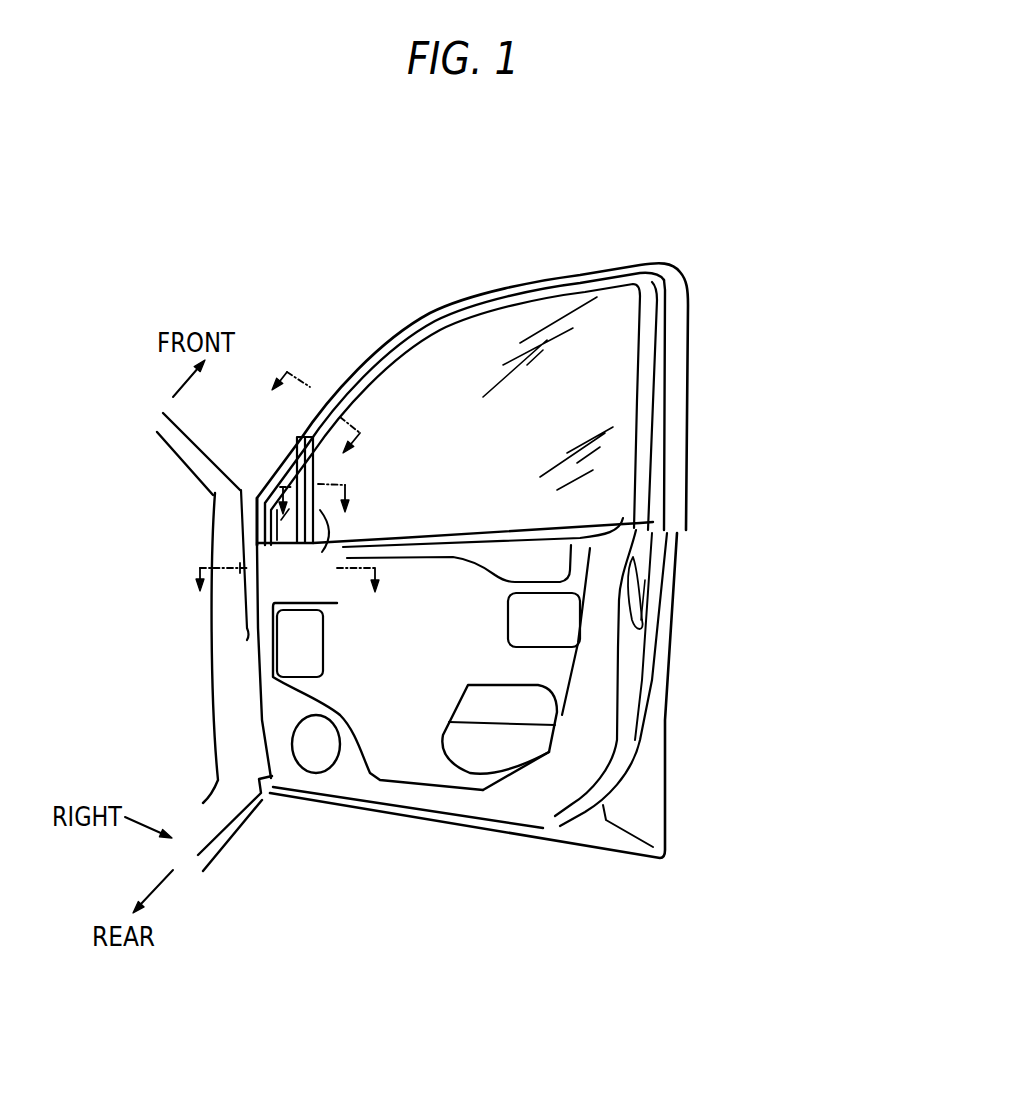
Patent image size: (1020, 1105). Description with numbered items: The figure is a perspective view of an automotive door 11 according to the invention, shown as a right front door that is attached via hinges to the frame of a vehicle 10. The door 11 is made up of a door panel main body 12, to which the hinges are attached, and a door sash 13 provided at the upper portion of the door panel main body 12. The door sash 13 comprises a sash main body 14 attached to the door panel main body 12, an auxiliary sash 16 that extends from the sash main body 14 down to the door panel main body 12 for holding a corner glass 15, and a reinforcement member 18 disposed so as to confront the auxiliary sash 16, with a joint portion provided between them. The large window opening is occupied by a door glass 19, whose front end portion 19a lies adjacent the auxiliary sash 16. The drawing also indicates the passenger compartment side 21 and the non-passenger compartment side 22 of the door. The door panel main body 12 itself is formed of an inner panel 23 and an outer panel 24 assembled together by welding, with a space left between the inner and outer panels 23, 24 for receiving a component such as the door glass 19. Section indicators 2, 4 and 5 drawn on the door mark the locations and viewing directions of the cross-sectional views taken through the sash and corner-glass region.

The vehicle 10 is at (237, 268).
The door 11 is at (391, 280).
The door panel main body 12 is at (705, 643).
The door sash 13 is at (704, 278).
The sash main body 14 is at (690, 337).
The corner glass 15 is at (280, 535).
The auxiliary sash 16 is at (322, 452).
The reinforcement member 18 is at (286, 465).
The door glass 19 is at (508, 328).
The front end portion of the door glass 19a is at (318, 552).
The passenger compartment side 21 is at (190, 703).
The non-passenger compartment side 22 is at (705, 820).
The inner panel 23 is at (527, 793).
The outer panel 24 is at (665, 730).
The section line II-II 2 is at (280, 487).
The section line IV-IV 4 is at (287, 581).
The section line V-V 5 is at (322, 405).